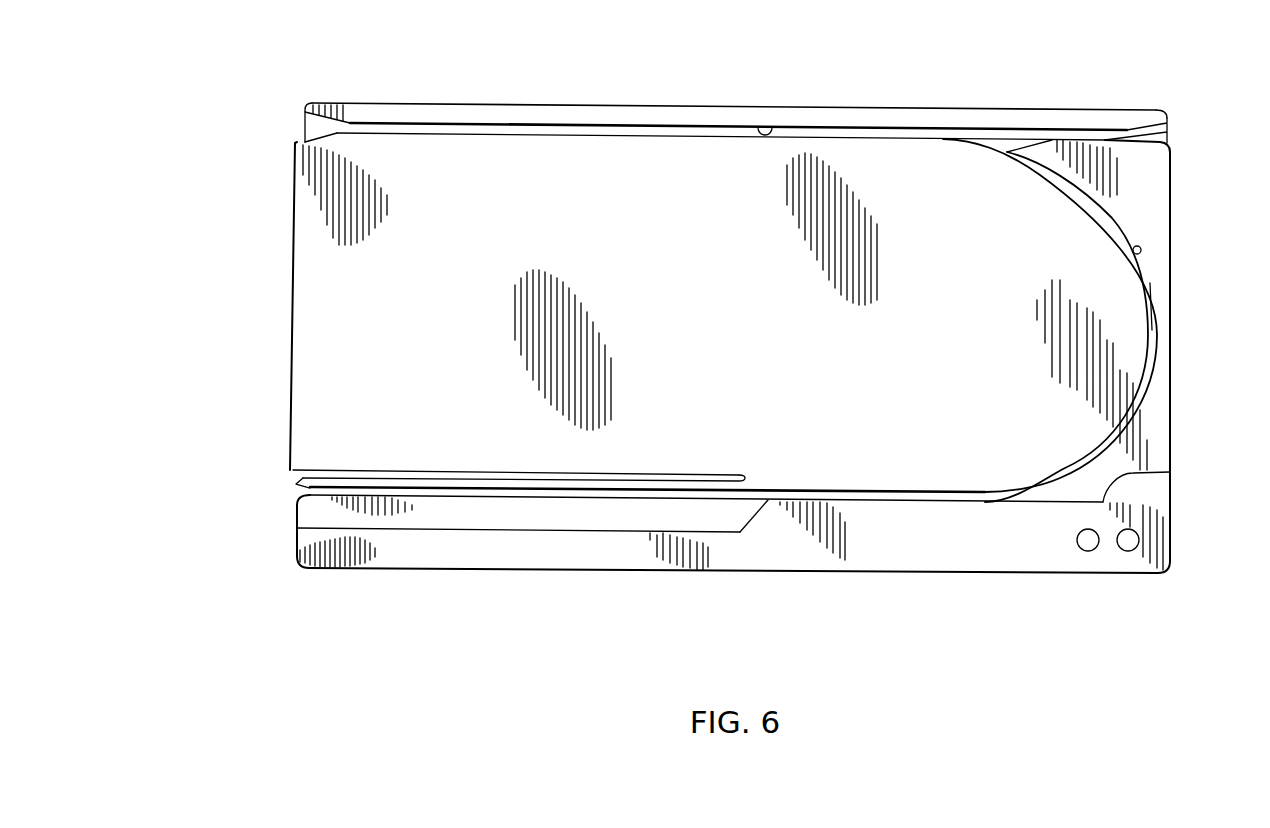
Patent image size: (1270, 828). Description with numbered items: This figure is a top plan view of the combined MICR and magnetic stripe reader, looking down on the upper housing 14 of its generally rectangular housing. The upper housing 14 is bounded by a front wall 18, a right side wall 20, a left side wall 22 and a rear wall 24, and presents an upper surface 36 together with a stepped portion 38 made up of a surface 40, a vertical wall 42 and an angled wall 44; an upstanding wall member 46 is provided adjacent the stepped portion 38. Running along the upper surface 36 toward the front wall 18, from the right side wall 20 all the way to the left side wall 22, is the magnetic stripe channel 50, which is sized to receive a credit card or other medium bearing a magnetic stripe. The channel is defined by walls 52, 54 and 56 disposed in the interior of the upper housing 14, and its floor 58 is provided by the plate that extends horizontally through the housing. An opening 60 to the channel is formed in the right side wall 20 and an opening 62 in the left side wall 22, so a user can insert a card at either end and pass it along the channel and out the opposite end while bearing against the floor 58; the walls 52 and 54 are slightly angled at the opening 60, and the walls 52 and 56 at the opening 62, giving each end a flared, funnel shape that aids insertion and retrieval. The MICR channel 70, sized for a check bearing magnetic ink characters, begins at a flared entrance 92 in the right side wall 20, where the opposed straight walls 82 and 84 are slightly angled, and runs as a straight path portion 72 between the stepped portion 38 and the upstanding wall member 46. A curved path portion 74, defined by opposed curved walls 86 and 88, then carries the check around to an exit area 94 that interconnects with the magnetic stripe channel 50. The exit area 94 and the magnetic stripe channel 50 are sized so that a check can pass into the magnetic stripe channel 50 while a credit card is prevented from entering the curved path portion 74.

The upper housing 14 is at (320, 265).
The front wall 18 is at (565, 104).
The right side wall 20 is at (292, 348).
The left side wall 22 is at (1172, 412).
The rear wall 24 is at (897, 574).
The upper surface 36 is at (318, 215).
The stepped portion 38 is at (810, 548).
The surface 40 is at (1010, 553).
The vertical wall 42 is at (1140, 457).
The angled wall 44 is at (528, 512).
The upstanding wall member 46 is at (367, 471).
The magnetic stripe channel 50 is at (413, 126).
The wall 52 is at (778, 128).
The wall 54 is at (712, 135).
The wall 56 is at (1103, 140).
The floor 58 is at (650, 128).
The opening 60 is at (330, 126).
The opening 62 is at (1153, 137).
The MICR channel 70 is at (633, 492).
The straight path portion 72 is at (453, 494).
The curved path portion 74 is at (1150, 318).
The straight wall 82 is at (433, 490).
The straight wall 84 is at (672, 495).
The curved wall 86 is at (1149, 277).
The curved wall 88 is at (1140, 244).
The entrance 92 is at (298, 484).
The exit area 94 is at (993, 138).